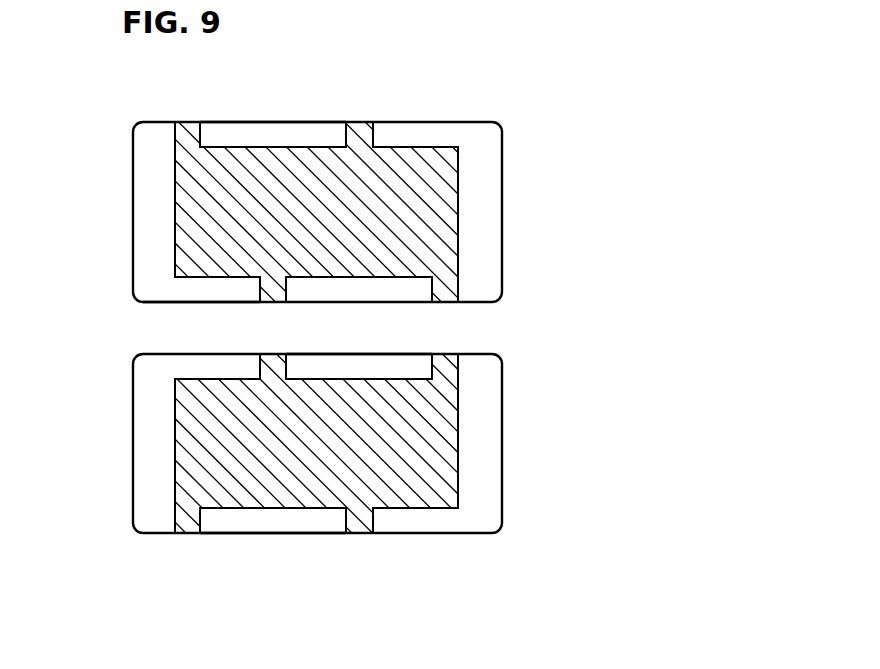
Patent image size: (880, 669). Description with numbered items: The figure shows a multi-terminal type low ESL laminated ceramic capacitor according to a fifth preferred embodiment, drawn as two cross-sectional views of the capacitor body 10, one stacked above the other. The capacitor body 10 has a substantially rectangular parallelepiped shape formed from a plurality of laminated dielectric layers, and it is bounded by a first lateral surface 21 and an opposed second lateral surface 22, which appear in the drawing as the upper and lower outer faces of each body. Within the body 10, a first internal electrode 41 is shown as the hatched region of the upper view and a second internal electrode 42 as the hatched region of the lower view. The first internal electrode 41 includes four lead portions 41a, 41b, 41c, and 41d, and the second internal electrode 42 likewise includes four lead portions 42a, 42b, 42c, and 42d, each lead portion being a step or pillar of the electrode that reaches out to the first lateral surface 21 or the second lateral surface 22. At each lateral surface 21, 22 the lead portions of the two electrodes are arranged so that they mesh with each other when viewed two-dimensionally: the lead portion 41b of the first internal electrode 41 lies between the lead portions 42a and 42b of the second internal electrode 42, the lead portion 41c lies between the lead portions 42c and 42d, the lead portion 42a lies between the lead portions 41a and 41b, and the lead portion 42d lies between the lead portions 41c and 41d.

The capacitor body 10 is at (512, 190).
The first lateral surface 21 is at (310, 122).
The second lateral surface 22 is at (152, 305).
The first internal electrode 41 is at (280, 146).
The lead portion 41a is at (200, 130).
The lead portion 41b is at (377, 137).
The lead portion 41c is at (286, 280).
The lead portion 41d is at (458, 282).
The second internal electrode 42 is at (230, 510).
The lead portion 42a is at (262, 356).
The lead portion 42b is at (430, 356).
The lead portion 42c is at (207, 522).
The lead portion 42d is at (378, 520).